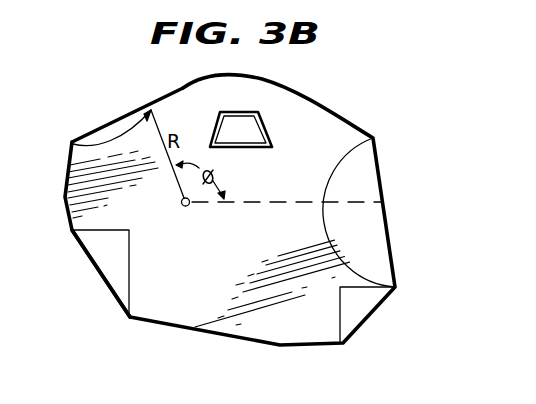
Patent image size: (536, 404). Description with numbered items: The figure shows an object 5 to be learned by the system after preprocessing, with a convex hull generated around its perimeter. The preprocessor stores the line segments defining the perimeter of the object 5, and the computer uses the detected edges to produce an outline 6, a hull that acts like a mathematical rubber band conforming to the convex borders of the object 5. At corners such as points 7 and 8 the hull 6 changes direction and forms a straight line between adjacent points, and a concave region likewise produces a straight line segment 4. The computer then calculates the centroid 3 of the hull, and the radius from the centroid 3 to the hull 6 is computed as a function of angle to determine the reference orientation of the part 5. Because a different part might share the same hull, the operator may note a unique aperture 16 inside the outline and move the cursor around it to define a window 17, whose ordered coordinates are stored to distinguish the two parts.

The centroid 3 is at (183, 207).
The straight line segment 4 is at (156, 85).
The object 5 is at (193, 289).
The outline 6 is at (95, 282).
The corner point 7 is at (376, 136).
The corner point 8 is at (387, 292).
The aperture 16 is at (238, 130).
The window 17 is at (259, 113).